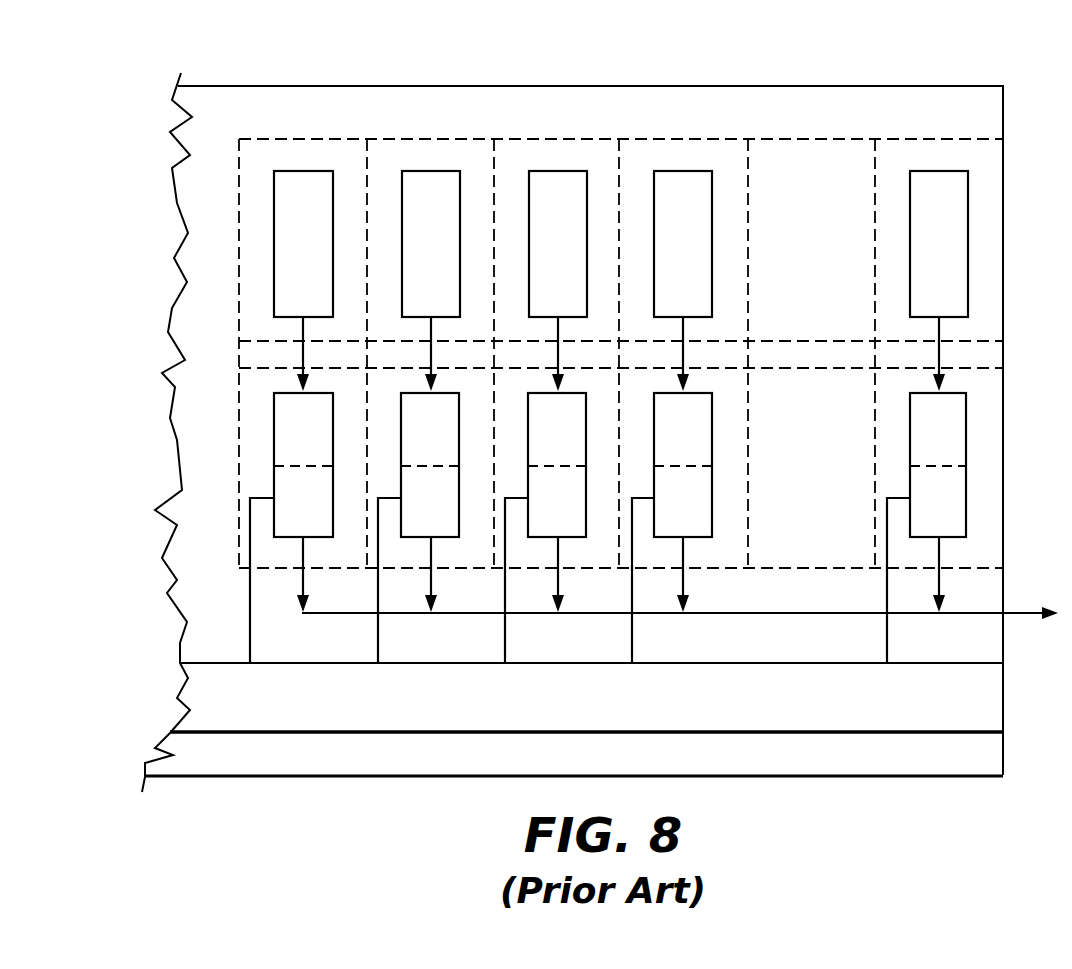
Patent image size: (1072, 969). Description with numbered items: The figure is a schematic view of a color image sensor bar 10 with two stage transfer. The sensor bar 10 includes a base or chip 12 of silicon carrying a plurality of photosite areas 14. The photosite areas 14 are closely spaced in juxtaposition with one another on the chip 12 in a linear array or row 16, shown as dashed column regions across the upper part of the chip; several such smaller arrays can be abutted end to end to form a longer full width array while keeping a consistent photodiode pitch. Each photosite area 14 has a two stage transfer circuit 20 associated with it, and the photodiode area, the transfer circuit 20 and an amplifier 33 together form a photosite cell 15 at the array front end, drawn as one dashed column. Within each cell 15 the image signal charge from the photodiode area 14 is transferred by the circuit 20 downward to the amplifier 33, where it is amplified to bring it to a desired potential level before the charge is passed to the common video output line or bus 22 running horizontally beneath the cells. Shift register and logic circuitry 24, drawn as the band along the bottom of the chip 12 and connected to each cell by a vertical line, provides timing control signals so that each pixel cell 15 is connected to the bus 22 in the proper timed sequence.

The color image sensor bar 10 is at (546, 44).
The chip 12 is at (735, 85).
The photosite area 14 is at (432, 170).
The photosite cell 15 is at (396, 135).
The linear array 16 is at (792, 137).
The two stage transfer circuit 20 is at (288, 436).
The common video output line 22 is at (808, 615).
The shift register and logic circuitry 24 is at (448, 733).
The amplifier 33 is at (288, 503).